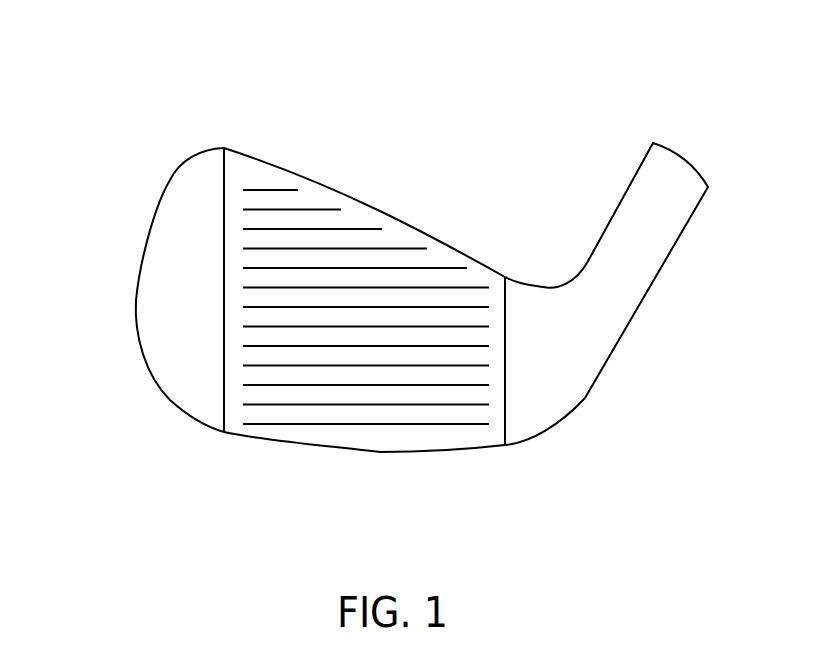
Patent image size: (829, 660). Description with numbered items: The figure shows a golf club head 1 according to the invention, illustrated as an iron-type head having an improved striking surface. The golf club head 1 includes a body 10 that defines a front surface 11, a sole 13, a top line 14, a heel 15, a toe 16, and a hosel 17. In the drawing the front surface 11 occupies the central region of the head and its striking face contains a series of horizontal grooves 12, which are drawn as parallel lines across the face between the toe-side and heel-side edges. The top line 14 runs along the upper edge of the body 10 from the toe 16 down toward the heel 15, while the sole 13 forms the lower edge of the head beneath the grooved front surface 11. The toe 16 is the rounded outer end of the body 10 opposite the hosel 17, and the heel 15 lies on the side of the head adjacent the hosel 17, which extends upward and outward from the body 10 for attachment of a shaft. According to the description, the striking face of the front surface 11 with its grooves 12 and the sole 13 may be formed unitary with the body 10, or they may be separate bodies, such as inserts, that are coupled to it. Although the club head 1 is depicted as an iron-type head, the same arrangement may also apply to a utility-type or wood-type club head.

The golf club head 1 is at (435, 81).
The body 10 is at (180, 192).
The front surface 11 is at (465, 413).
The grooves 12 is at (465, 287).
The sole 13 is at (333, 448).
The top line 14 is at (328, 185).
The heel 15 is at (629, 362).
The toe 16 is at (118, 293).
The hosel 17 is at (697, 210).